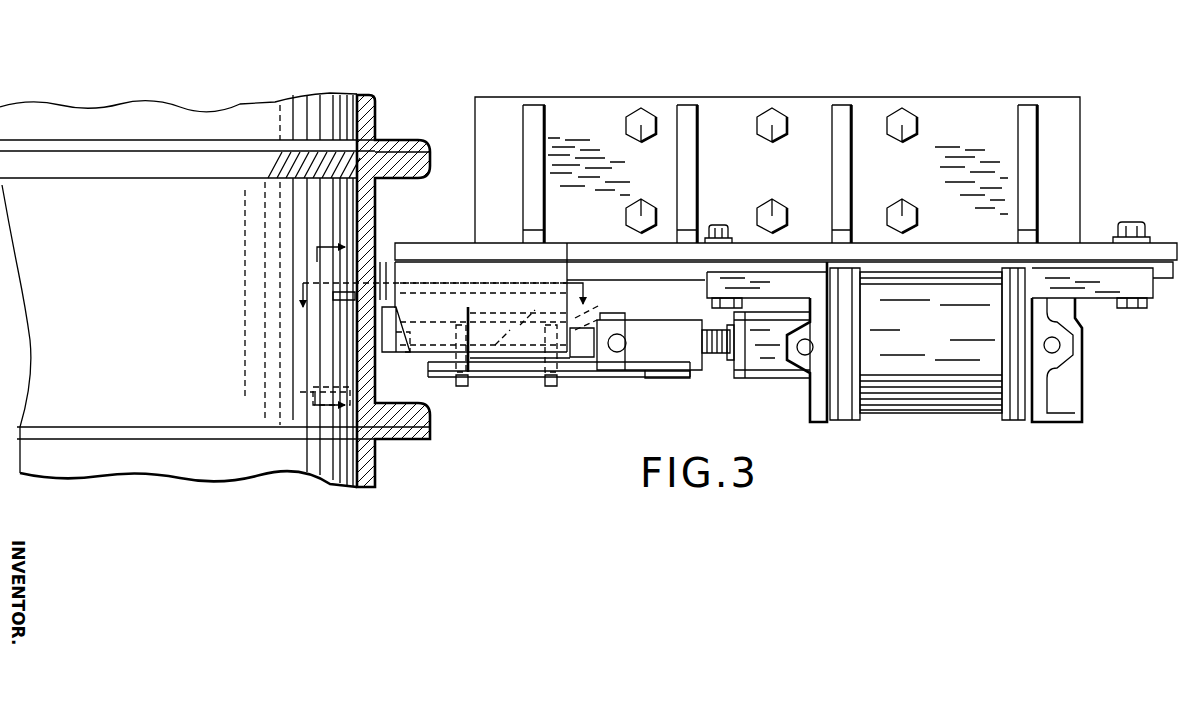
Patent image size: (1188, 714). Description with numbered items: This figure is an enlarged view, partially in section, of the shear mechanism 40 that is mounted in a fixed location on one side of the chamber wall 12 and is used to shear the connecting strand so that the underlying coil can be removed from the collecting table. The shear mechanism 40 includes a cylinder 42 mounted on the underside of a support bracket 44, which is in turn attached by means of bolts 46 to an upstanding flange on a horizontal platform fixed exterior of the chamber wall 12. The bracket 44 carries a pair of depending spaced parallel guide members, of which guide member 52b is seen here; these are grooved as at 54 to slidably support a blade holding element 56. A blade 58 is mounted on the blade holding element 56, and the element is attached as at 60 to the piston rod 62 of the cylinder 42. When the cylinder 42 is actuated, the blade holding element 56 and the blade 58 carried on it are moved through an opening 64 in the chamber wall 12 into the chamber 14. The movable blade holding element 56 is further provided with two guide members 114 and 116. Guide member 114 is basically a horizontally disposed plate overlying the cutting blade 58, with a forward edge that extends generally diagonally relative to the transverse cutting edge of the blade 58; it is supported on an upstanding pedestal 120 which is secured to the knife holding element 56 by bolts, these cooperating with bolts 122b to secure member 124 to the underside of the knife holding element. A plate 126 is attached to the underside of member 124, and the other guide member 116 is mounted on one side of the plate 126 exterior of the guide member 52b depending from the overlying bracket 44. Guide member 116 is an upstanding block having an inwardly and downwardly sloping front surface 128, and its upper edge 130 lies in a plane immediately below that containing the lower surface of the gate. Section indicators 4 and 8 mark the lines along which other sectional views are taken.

The chamber wall 12 is at (357, 193).
The chamber 14 is at (170, 256).
The section line 4- 4 is at (329, 322).
The section line 8- 8 is at (445, 291).
The support bracket 44 is at (1072, 163).
The bolts 46 is at (641, 198).
The guide member 52b is at (408, 266).
The guide member 114 is at (382, 296).
The upper edge 130 is at (440, 316).
The guide member 116 is at (470, 309).
The groove 54 is at (507, 343).
The blade 58 is at (413, 360).
The sloping front surface 128 is at (355, 332).
The opening 64 is at (350, 390).
The bolts 122b is at (463, 386).
The plate 126 is at (497, 372).
The blade holding element 56 is at (520, 358).
The member 124 is at (535, 364).
The attachment 60 is at (578, 358).
The pedestal 120 is at (578, 317).
The piston rod 62 is at (718, 355).
The shear mechanism 40 is at (826, 430).
The cylinder 42 is at (961, 393).